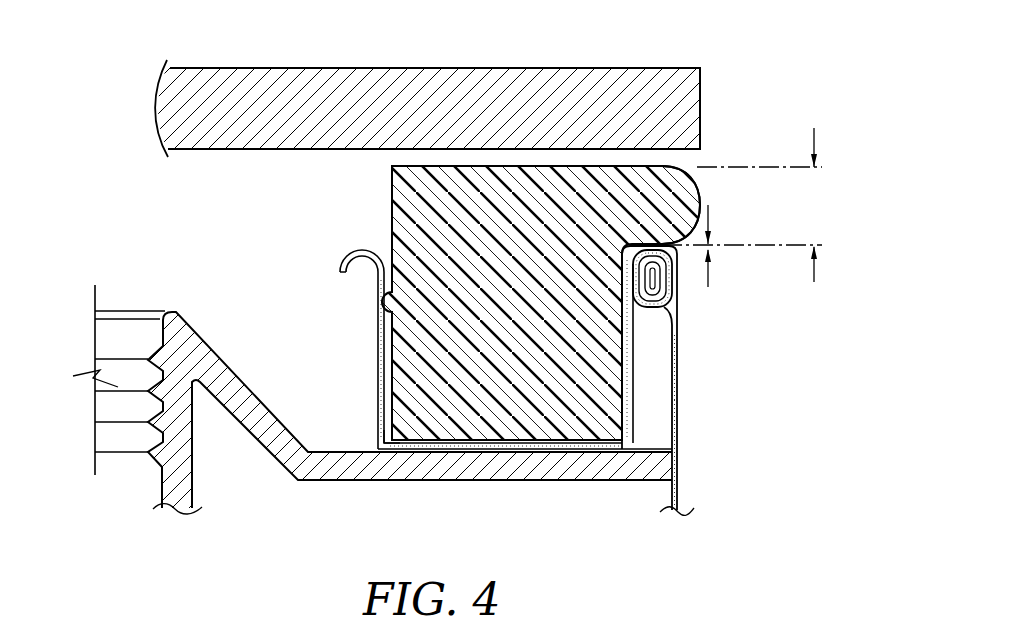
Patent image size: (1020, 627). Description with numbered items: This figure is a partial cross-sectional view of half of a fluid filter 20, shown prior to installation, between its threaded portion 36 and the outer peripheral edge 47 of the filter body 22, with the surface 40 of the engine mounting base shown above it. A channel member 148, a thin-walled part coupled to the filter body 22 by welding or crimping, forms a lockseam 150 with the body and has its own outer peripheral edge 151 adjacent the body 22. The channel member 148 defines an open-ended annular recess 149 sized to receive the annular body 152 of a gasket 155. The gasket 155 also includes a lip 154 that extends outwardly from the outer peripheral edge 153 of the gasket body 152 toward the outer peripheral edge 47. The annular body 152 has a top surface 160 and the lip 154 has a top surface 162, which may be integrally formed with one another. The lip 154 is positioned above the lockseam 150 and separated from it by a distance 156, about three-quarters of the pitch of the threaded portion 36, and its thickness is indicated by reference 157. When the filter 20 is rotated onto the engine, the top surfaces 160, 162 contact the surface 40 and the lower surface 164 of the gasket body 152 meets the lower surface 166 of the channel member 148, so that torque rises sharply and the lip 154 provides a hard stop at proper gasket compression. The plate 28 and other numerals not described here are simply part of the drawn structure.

The fluid filter 20 is at (714, 469).
The filter body 22 is at (676, 485).
The bottom panel 28 is at (510, 480).
The threaded portion 36 is at (160, 405).
The surface of the engine mounting base 40 is at (236, 150).
The outer peripheral edge 47 is at (678, 325).
The channel member 148 is at (380, 353).
The annular recess 149 is at (387, 441).
The lockseam 150 is at (674, 285).
The outer peripheral edge of the channel member 151 is at (634, 393).
The annular body 152 is at (540, 316).
The outer peripheral edge of the gasket body 153 is at (623, 337).
The lip 154 is at (677, 214).
The gasket 155 is at (392, 188).
The distance 156 is at (708, 287).
The lip thickness 157 is at (814, 128).
The top surface of the annular body 160 is at (463, 165).
The top surface of the lip 162 is at (670, 165).
The lower surface of the gasket body 164 is at (462, 440).
The lower surface of the channel member 166 is at (408, 452).